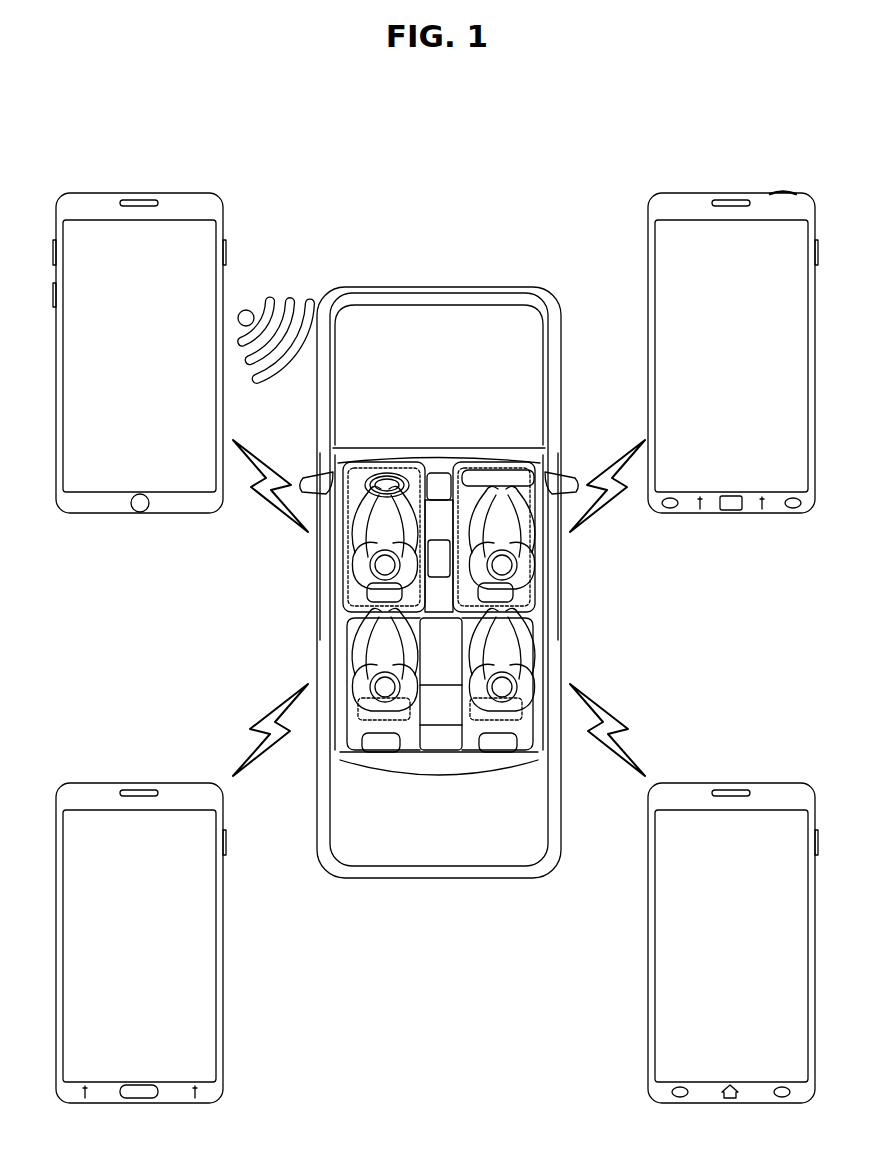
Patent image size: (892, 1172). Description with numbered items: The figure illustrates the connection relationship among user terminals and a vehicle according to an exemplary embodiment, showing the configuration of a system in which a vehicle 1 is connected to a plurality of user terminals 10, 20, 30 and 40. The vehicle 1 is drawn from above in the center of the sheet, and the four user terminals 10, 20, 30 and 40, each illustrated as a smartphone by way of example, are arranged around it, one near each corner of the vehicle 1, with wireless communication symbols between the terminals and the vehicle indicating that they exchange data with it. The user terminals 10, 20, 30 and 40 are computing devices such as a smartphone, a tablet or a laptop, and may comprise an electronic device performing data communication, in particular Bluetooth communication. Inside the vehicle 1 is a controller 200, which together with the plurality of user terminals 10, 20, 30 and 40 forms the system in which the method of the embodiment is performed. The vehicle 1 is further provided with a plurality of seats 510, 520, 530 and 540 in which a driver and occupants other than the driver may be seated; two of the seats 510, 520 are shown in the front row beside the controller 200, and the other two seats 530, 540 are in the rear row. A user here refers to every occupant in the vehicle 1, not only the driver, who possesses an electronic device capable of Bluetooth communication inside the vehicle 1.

The vehicle 1 is at (437, 258).
The user terminal 10 is at (226, 194).
The user terminal 20 is at (649, 197).
The user terminal 30 is at (222, 1111).
The user terminal 40 is at (649, 1109).
The controller 200 is at (434, 473).
The seat 510 is at (357, 580).
The seat 520 is at (527, 580).
The seat 530 is at (352, 752).
The seat 540 is at (528, 752).